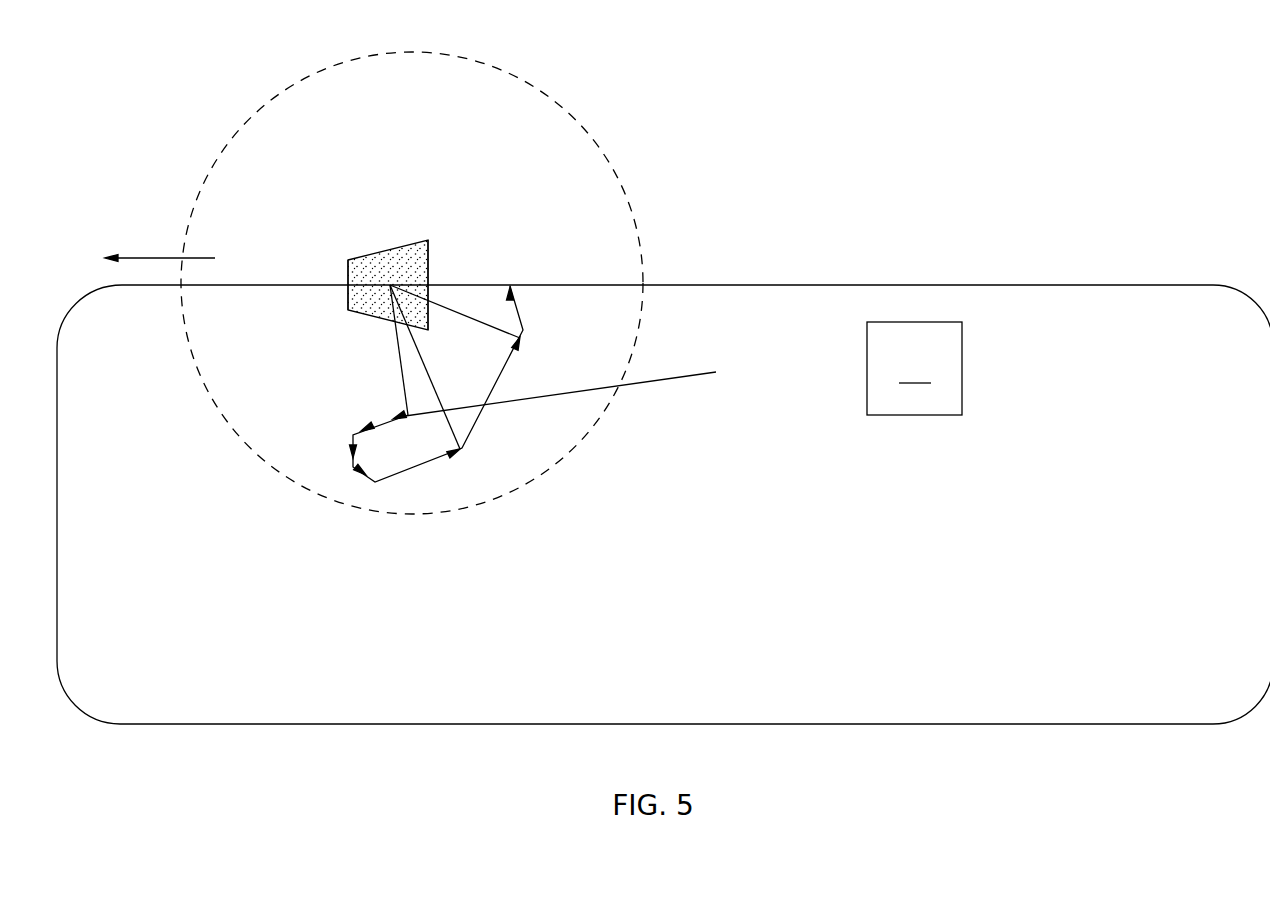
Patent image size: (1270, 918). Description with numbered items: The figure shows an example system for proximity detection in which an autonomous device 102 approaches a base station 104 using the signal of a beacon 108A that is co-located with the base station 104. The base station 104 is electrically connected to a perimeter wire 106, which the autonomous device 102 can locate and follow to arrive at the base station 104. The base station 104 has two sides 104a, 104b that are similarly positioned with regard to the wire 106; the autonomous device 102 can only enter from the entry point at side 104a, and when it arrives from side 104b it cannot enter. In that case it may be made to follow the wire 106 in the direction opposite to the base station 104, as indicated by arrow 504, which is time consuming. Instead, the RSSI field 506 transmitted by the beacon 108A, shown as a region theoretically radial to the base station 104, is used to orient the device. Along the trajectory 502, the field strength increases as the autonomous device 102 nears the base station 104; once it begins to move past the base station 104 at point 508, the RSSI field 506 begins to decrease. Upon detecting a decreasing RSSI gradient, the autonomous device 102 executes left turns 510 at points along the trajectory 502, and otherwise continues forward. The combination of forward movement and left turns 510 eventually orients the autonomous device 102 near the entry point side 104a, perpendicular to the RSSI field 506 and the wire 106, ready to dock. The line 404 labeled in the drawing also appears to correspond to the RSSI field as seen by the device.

The autonomous device 102 is at (914, 368).
The base station 104 is at (421, 240).
The entry point side of the base station 104a is at (430, 282).
The side of the base station 104b is at (348, 297).
The perimeter wire 106 is at (828, 284).
The beacon 108A is at (375, 267).
The emitted light beam 404 is at (398, 343).
The trajectory 502 is at (716, 372).
The arrow 504 is at (165, 257).
The RSSI field 506 is at (605, 151).
The point 508 is at (392, 416).
The left turns 510 is at (352, 435).